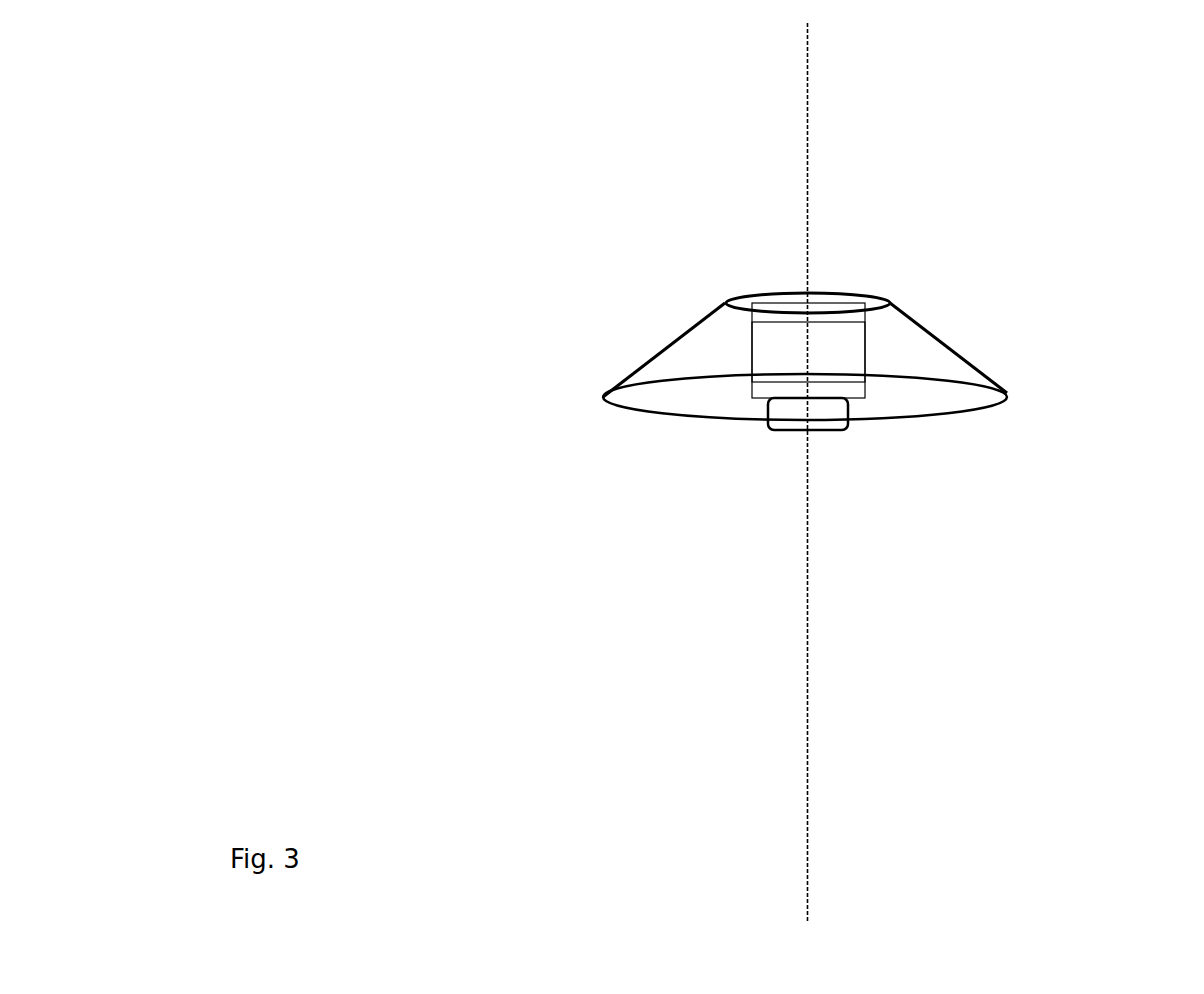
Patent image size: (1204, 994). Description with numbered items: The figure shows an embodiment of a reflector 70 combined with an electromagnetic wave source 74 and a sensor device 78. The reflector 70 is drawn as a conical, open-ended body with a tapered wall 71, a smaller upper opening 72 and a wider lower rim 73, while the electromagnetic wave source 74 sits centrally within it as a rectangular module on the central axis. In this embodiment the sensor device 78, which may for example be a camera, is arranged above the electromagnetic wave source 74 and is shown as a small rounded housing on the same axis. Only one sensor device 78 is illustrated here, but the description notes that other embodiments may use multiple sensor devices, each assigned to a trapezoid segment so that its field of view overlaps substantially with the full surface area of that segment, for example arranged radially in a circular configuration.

The reflector 70 is at (946, 288).
The reflector cone wall 71 is at (658, 355).
The top opening 72 is at (725, 303).
The lower rim 73 is at (607, 395).
The electromagnetic wave source 74 is at (842, 322).
The sensor device 78 is at (827, 414).